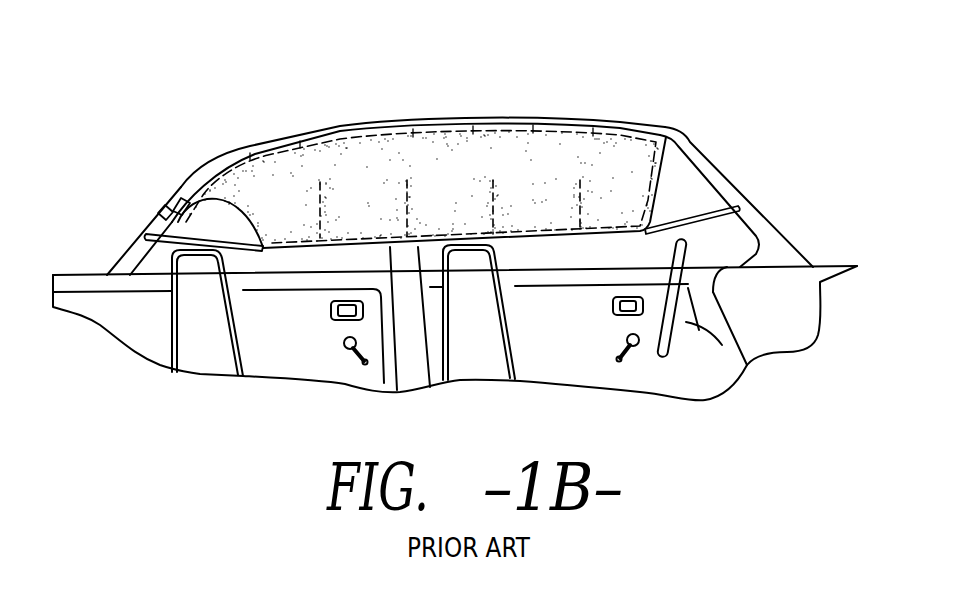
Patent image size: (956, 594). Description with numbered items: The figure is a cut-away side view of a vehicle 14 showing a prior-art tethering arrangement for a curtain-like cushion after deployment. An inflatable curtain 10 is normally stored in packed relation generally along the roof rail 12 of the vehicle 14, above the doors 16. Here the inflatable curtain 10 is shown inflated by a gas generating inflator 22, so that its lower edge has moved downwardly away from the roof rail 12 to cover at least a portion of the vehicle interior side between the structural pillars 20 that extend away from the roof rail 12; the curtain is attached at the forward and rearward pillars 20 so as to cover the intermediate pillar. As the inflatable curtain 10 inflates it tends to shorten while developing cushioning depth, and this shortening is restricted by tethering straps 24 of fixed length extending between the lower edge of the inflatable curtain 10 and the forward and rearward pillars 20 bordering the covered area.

The inflatable curtain 10 is at (567, 148).
The roof rail 12 is at (341, 128).
The vehicle 14 is at (704, 104).
The doors 16 is at (310, 344).
The structural pillars 20 is at (143, 225).
The gas generating inflator 22 is at (166, 202).
The tethering straps 24 is at (147, 236).